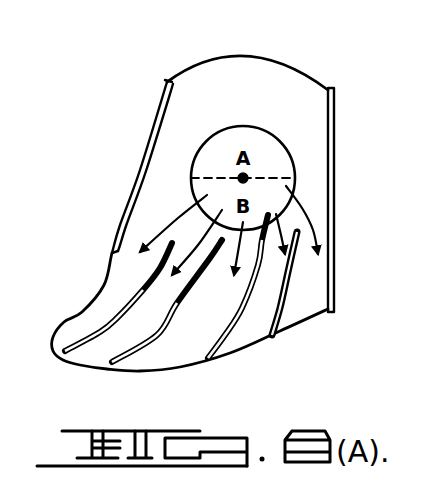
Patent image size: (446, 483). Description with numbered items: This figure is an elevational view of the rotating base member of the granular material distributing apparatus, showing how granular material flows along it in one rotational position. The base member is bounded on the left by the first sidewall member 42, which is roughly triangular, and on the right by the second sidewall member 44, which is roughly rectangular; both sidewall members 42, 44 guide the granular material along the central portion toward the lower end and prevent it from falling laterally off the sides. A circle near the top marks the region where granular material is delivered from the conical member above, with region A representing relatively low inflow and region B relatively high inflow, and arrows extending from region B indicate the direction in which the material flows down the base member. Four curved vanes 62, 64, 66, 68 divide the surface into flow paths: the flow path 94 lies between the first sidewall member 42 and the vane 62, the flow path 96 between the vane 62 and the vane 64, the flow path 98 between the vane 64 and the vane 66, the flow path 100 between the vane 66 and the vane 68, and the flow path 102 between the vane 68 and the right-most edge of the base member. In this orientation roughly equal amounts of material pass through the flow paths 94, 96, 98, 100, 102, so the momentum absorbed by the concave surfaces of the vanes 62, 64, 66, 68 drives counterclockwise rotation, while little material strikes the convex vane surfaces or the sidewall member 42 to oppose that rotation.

The first sidewall member 42 is at (147, 124).
The second sidewall member 44 is at (335, 191).
The vane 62 is at (90, 338).
The vane 64 is at (152, 360).
The vane 66 is at (233, 335).
The vane 68 is at (298, 318).
The flow path 94 is at (105, 291).
The flow path 96 is at (111, 349).
The flow path 98 is at (193, 359).
The flow path 100 is at (254, 334).
The flow path 102 is at (317, 291).